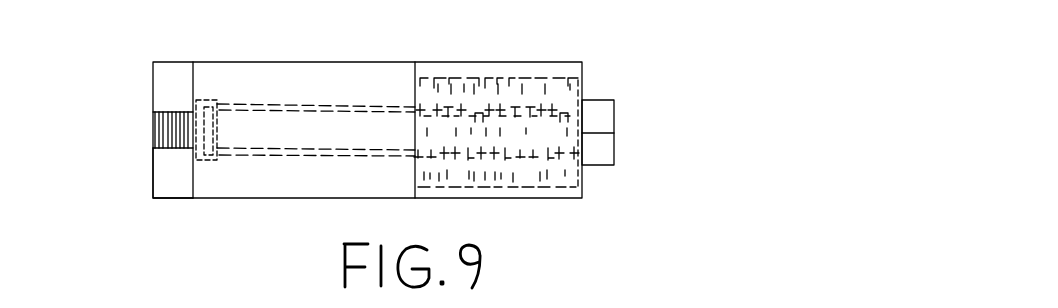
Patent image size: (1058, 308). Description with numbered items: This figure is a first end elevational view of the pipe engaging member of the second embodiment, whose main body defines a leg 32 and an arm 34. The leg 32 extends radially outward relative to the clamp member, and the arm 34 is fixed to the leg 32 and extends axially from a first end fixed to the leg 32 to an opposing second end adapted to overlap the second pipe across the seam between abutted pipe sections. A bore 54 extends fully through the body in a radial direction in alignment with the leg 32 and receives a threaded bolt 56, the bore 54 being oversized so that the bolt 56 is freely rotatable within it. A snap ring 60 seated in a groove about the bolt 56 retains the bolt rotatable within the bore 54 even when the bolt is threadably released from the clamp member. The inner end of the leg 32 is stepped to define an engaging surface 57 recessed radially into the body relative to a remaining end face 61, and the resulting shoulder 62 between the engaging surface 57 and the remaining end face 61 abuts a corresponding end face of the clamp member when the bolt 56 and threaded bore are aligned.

The leg 32 is at (285, 67).
The arm 34 is at (492, 65).
The bore 54 is at (297, 157).
The threaded bolt 56 is at (614, 122).
The engaging surface 57 is at (190, 75).
The snap ring 60 is at (198, 150).
The remaining end face 61 is at (155, 194).
The shoulder 62 is at (172, 183).